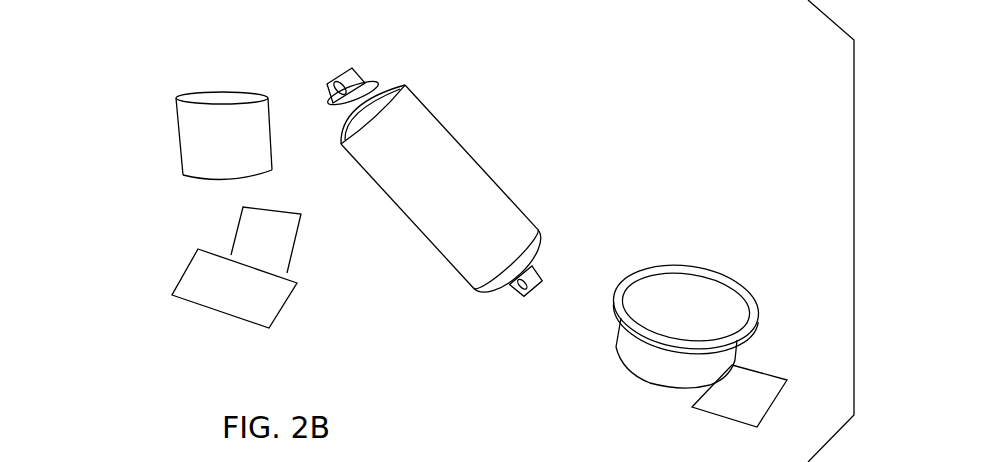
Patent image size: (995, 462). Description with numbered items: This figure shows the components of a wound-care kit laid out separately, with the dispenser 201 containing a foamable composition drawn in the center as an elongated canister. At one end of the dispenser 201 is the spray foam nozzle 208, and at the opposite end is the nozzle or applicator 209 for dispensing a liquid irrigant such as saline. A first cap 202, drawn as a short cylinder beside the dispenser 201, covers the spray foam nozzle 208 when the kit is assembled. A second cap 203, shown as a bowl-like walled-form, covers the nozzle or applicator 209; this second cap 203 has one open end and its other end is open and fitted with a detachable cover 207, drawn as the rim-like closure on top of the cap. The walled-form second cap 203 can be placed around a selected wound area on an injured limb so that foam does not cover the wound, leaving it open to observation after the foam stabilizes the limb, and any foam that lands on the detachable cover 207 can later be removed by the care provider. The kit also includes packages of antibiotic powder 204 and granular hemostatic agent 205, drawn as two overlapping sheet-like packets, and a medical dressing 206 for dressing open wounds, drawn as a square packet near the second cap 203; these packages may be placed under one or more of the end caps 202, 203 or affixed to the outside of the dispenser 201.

The dispenser 201 is at (467, 251).
The first cap 202 is at (185, 122).
The second cap 203 is at (666, 377).
The package of antibiotic powder 204 is at (248, 233).
The package of granular hemostatic agent 205 is at (227, 297).
The medical dressing 206 is at (760, 400).
The detachable cover 207 is at (760, 326).
The spray foam nozzle 208 is at (367, 72).
The nozzle or applicator 209 is at (545, 268).